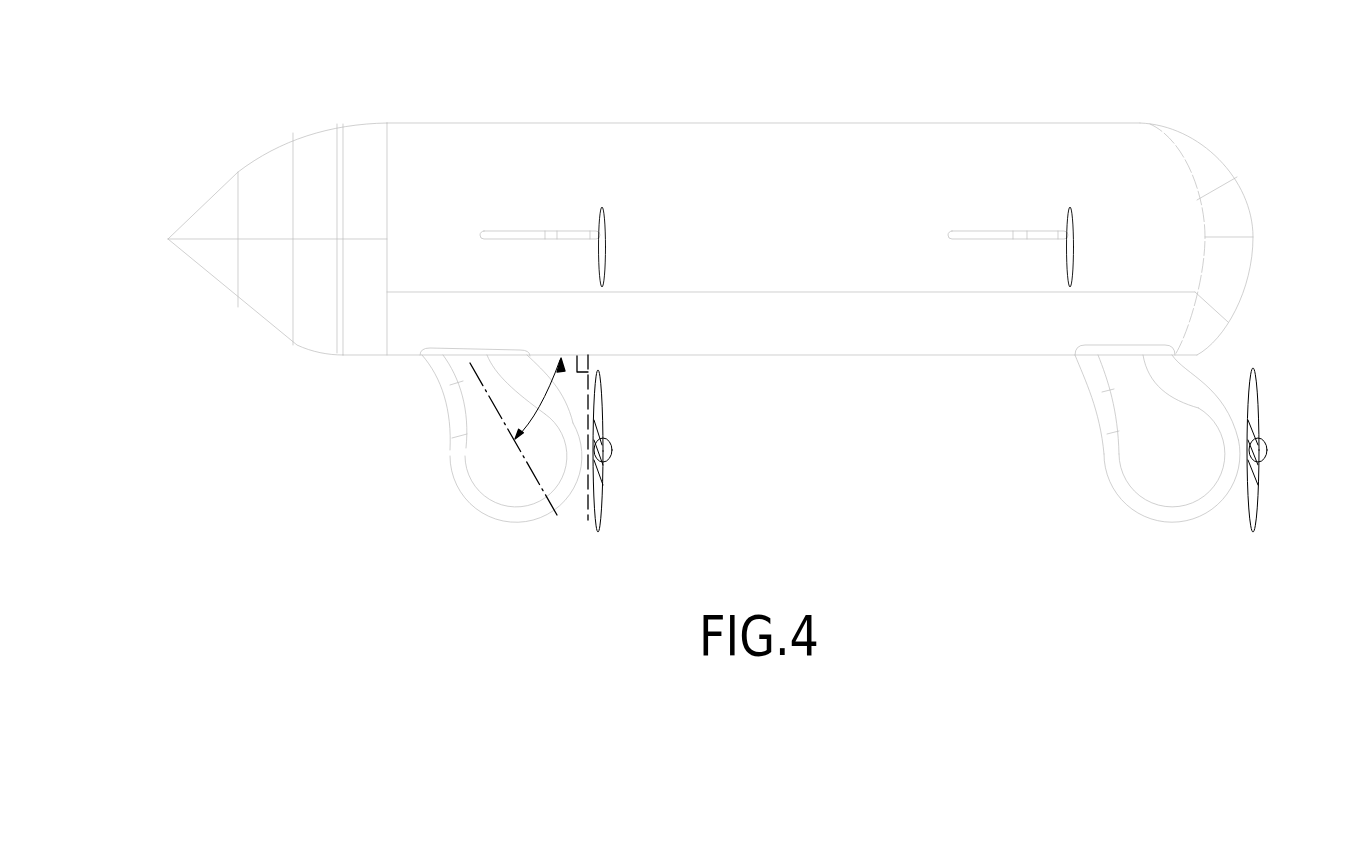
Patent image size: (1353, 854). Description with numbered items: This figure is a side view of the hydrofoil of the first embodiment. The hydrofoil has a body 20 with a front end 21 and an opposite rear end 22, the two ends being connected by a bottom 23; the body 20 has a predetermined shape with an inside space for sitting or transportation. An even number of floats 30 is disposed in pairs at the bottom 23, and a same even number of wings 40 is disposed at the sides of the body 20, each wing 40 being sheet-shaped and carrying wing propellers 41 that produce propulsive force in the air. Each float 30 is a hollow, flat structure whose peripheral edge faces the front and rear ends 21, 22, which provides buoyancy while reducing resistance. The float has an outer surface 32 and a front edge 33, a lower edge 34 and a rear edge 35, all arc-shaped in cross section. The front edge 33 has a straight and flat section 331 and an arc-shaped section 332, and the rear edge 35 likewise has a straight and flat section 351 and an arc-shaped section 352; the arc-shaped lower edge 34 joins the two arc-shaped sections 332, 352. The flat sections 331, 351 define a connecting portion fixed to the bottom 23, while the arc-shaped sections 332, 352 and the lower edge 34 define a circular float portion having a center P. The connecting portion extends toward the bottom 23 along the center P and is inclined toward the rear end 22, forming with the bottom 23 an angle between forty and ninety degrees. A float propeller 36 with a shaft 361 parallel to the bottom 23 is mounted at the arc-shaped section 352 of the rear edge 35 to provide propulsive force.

The body 20 is at (522, 112).
The front end 21 is at (210, 225).
The rear end 22 is at (1235, 272).
The bottom 23 is at (938, 357).
The float 30 is at (440, 491).
The outer surface 32 is at (547, 475).
The front edge 33 is at (360, 375).
The straight and flat section 331 is at (452, 380).
The arc-shaped section 332 is at (453, 440).
The lower edge 34 is at (508, 512).
The rear edge 35 is at (1313, 307).
The straight and flat section 351 is at (510, 380).
The arc-shaped section 352 is at (570, 412).
The float propeller 36 is at (598, 502).
The shaft 361 is at (607, 447).
The wing 40 is at (579, 212).
The wing propeller 41 is at (603, 255).
The center P is at (517, 448).